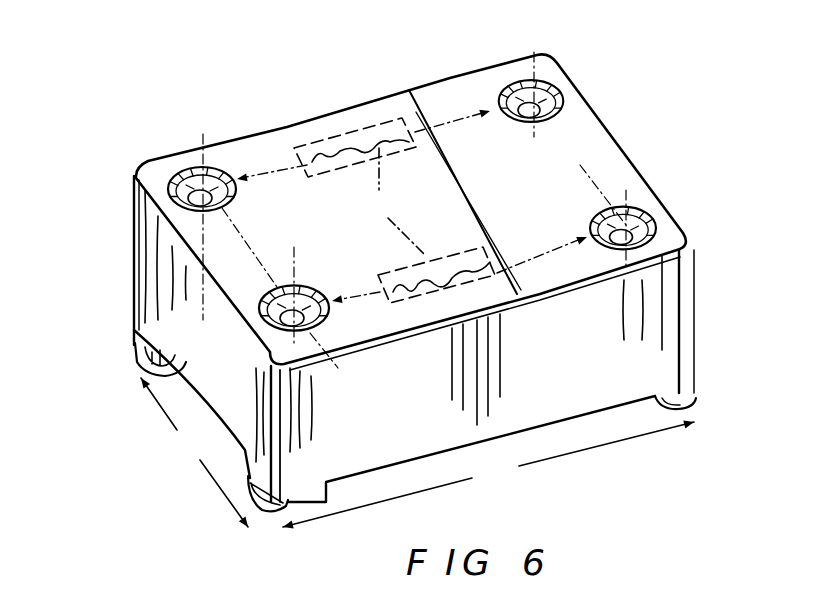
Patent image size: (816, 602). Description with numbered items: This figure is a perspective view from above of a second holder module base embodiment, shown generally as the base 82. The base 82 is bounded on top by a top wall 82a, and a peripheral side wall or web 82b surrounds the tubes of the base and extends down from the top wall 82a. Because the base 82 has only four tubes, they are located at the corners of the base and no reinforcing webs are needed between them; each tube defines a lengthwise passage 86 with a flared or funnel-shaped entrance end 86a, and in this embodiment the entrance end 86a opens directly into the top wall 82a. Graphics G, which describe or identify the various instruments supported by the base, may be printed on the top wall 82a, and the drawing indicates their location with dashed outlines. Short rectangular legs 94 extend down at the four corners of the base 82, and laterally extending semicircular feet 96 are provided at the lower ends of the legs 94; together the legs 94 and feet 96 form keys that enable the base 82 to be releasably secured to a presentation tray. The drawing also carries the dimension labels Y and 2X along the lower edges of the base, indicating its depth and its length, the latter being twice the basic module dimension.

The module base 82 is at (118, 246).
The top wall 82a is at (312, 125).
The peripheral side wall 82b is at (672, 298).
The lengthwise passage 86 is at (176, 196).
The flared entrance end 86a is at (198, 200).
The legs 94 is at (137, 345).
The feet 96 is at (140, 362).
The graphics G is at (398, 201).
The depth dimension Y is at (194, 452).
The length dimension 2X is at (488, 475).